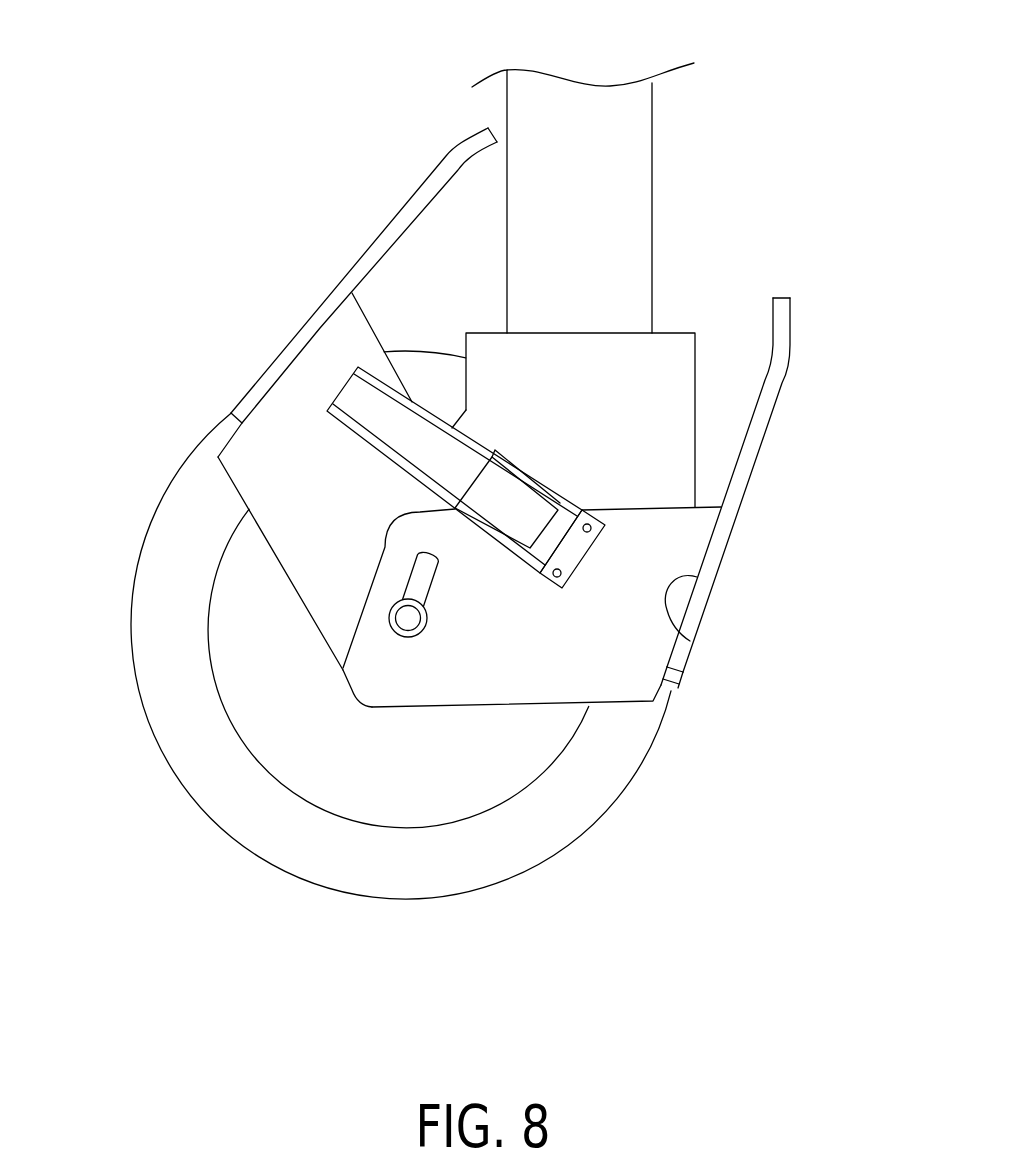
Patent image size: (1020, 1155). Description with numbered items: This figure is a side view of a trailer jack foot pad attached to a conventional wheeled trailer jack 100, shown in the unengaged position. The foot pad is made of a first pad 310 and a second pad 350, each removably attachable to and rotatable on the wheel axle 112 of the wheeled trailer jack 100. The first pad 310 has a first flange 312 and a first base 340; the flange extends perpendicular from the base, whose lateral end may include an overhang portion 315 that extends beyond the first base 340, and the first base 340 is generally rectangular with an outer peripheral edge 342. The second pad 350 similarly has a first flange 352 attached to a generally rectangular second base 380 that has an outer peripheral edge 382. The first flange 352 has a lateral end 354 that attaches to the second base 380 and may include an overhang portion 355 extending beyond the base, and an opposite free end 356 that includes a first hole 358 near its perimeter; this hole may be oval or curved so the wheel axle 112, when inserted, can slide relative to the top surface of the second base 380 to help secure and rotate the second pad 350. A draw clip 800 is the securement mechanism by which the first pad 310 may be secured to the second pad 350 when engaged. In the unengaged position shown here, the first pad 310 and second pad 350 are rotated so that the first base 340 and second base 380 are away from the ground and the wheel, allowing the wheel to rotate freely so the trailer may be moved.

The wheeled trailer jack 100 is at (623, 177).
The wheel axle 112 is at (398, 628).
The first pad 310 is at (287, 435).
The first flange 312 is at (347, 503).
The overhang portion 315 is at (233, 438).
The first base 340 is at (390, 223).
The outer peripheral edge 342 is at (497, 130).
The second pad 350 is at (575, 675).
The first flange 352 is at (563, 627).
The lateral end 354 is at (690, 642).
The overhang portion 355 is at (662, 682).
The free end 356 is at (370, 677).
The first hole 358 is at (415, 575).
The second base 380 is at (753, 443).
The outer peripheral edge 382 is at (777, 293).
The draw clip 800 is at (362, 403).